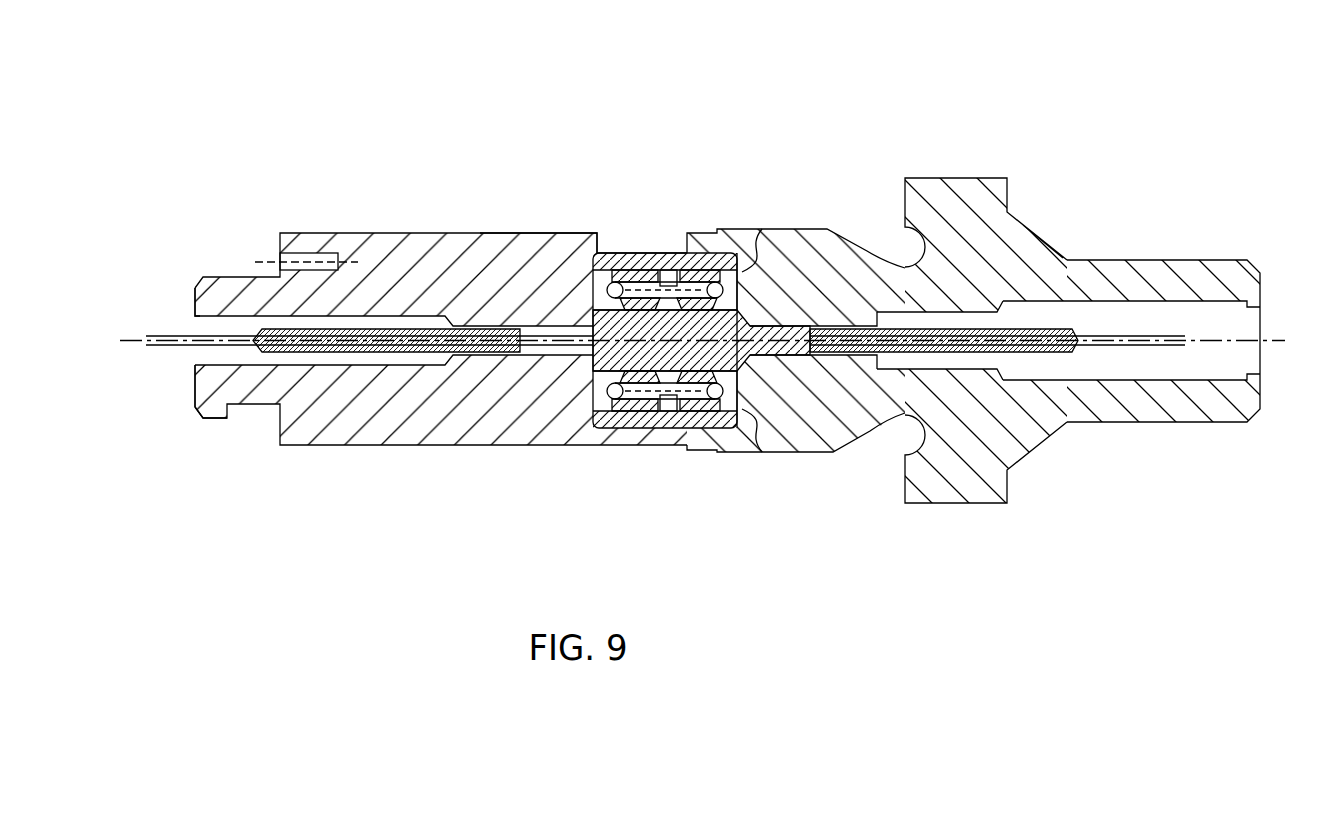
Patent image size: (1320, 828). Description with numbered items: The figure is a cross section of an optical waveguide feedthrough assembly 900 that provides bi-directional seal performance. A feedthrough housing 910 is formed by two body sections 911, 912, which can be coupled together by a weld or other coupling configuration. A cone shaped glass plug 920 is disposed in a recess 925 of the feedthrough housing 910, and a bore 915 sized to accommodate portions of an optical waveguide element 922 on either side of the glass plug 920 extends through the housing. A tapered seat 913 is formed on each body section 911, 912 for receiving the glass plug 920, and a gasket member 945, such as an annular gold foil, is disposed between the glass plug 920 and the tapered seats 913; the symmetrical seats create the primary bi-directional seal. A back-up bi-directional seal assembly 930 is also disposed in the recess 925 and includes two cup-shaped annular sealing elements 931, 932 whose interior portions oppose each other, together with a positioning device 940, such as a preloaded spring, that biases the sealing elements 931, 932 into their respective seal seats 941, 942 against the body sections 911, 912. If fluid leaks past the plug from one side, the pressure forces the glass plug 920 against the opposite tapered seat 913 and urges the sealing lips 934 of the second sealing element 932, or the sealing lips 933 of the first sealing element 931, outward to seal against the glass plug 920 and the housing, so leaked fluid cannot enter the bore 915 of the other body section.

The feedthrough assembly 900 is at (1140, 225).
The feedthrough housing 910 is at (825, 218).
The first body section 911 is at (957, 178).
The second body section 912 is at (307, 233).
The tapered seat 913 is at (745, 268).
The bore 915 is at (232, 353).
The glass plug 920 is at (604, 350).
The optical waveguide element 922 is at (232, 337).
The recess 925 is at (752, 452).
The bi-directional seal assembly 930 is at (665, 415).
The first sealing element 931 is at (709, 283).
The second sealing element 932 is at (600, 253).
The sealing lips 933 is at (672, 272).
The sealing lips 934 is at (640, 272).
The positioning device 940 is at (668, 274).
The seal seat 941 is at (733, 258).
The seal seat 942 is at (507, 233).
The gasket member 945 is at (577, 306).